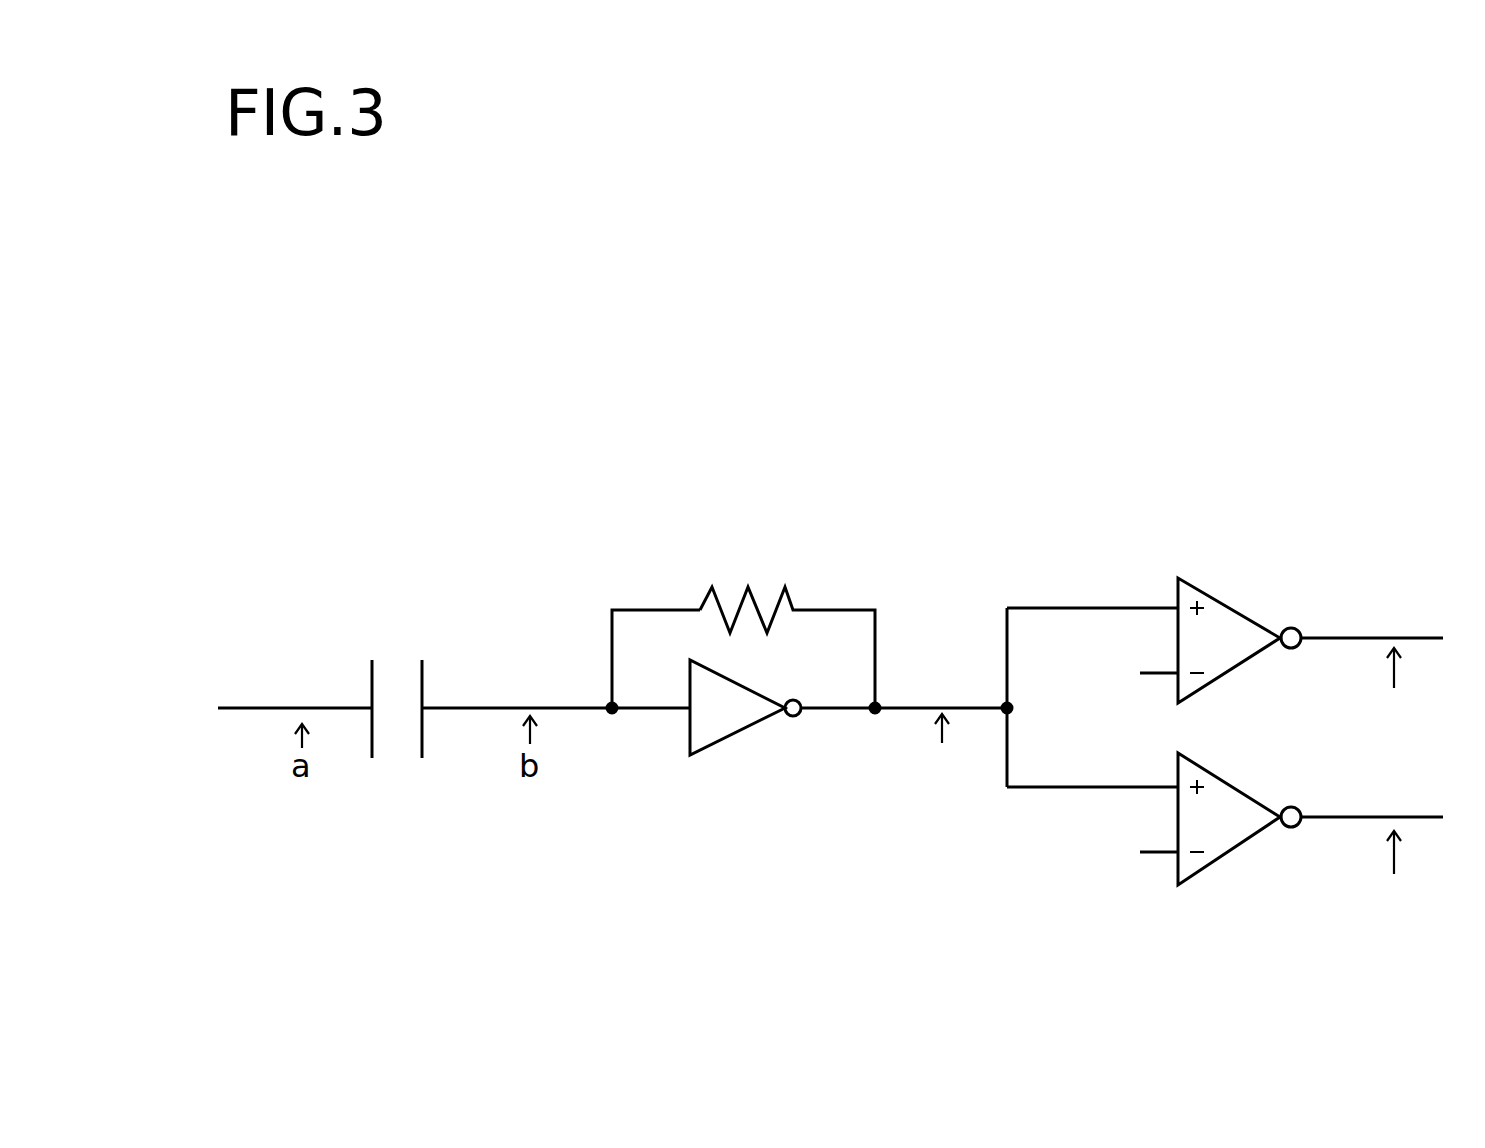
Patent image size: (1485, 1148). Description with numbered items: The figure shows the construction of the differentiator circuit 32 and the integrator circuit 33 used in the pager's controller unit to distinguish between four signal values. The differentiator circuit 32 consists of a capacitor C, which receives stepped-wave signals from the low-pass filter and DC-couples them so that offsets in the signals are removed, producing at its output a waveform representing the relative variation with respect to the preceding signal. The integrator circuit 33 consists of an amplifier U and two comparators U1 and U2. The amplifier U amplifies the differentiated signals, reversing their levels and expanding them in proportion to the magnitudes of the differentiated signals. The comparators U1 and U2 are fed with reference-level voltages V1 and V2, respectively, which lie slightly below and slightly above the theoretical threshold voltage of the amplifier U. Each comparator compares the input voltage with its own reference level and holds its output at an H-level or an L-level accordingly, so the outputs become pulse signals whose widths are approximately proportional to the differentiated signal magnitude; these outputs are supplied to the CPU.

The differentiator circuit 32 is at (382, 583).
The integrator circuit 33 is at (1025, 608).
The capacitor C is at (396, 794).
The amplifier U is at (743, 700).
The comparator U1 is at (1265, 628).
The comparator U2 is at (1265, 808).
The reference level voltage V1 is at (1132, 675).
The reference level voltage V2 is at (1132, 854).